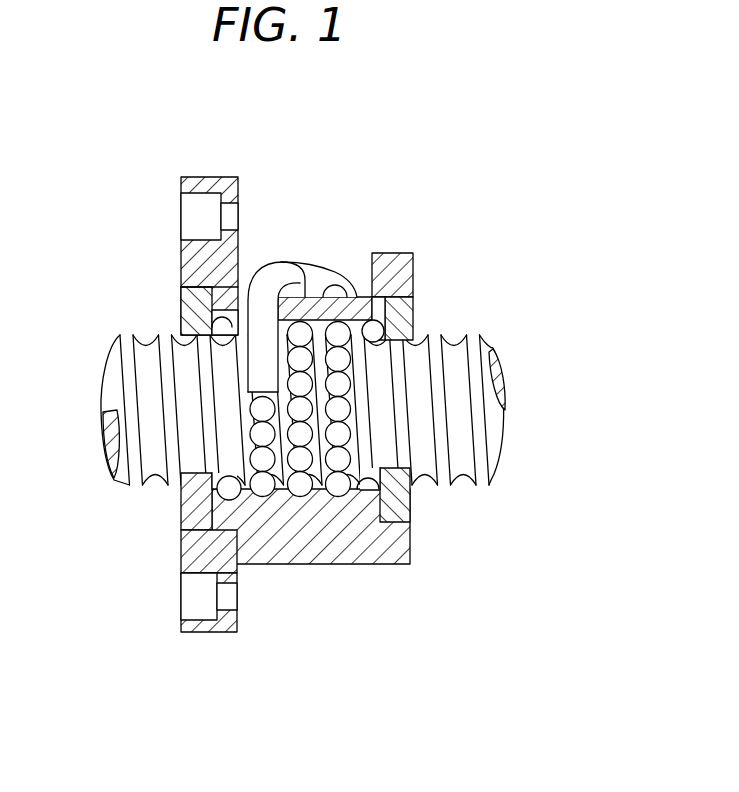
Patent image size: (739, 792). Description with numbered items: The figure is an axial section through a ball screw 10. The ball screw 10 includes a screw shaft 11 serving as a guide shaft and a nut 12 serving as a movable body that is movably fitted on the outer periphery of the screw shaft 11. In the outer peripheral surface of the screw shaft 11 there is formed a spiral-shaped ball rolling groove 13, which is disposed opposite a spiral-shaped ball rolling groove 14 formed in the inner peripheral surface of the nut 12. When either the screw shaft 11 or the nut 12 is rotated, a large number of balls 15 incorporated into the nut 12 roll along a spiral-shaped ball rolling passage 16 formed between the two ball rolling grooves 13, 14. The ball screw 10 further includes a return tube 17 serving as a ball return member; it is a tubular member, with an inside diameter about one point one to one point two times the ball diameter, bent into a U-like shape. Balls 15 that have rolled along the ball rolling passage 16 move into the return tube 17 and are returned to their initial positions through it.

The ball screw 10 is at (401, 205).
The screw shaft 11 is at (144, 389).
The nut 12 is at (317, 567).
The ball rolling groove 13 is at (455, 345).
The ball rolling groove 14 is at (208, 333).
The balls 15 is at (347, 458).
The ball rolling passage 16 is at (233, 492).
The return tube 17 is at (313, 262).